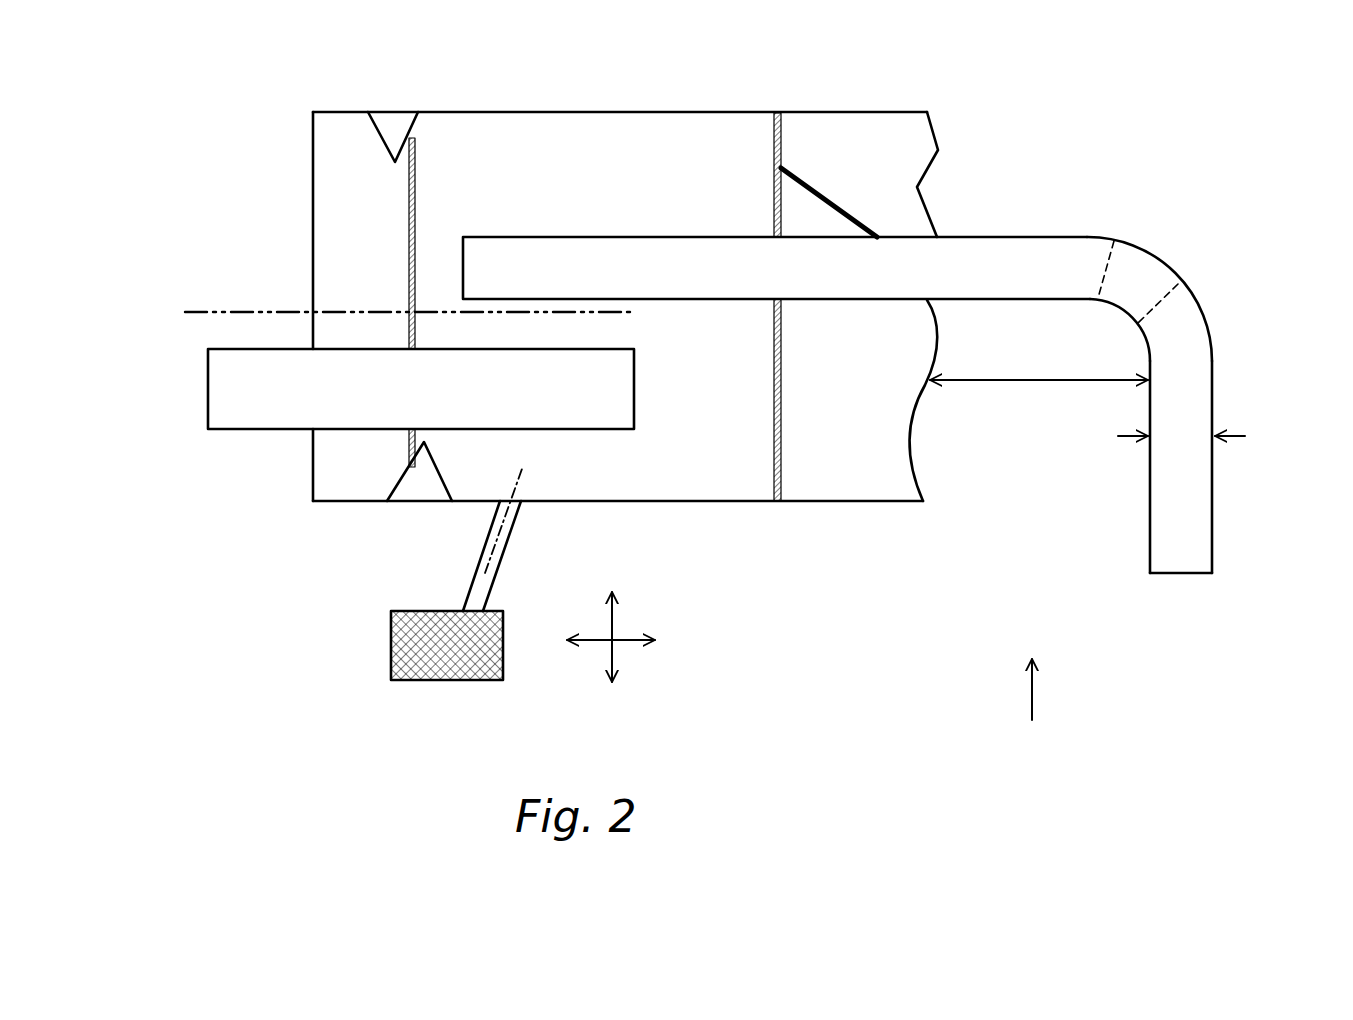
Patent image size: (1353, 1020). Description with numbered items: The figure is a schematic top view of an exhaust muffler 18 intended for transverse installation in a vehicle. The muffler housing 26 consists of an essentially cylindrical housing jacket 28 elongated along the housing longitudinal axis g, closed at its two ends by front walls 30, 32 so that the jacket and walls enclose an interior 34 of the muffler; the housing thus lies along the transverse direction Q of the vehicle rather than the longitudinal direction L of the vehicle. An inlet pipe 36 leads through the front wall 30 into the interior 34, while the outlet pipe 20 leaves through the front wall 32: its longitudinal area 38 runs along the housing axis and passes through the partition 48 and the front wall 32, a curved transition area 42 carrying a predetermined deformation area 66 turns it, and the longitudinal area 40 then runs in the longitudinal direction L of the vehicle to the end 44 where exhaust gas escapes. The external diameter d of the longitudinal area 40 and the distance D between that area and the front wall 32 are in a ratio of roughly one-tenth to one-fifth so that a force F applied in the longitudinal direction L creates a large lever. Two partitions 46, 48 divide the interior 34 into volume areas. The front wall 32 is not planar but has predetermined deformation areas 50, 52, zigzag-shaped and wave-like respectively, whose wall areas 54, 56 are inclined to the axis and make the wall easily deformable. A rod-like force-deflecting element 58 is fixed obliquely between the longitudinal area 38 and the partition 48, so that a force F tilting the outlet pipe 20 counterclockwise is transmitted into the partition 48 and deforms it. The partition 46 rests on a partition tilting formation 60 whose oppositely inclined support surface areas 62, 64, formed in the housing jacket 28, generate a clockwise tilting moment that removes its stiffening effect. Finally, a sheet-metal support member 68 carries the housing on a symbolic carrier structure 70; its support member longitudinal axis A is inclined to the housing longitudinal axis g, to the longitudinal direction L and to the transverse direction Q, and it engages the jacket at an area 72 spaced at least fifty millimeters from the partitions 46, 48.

The exhaust muffler 18 is at (1020, 90).
The outlet pipe 20 is at (1218, 386).
The muffler housing 26 is at (837, 535).
The housing jacket 28 is at (635, 113).
The front wall 30 is at (313, 172).
The front wall 32 is at (940, 147).
The interior of the muffler 34 is at (505, 140).
The inlet pipe 36 is at (208, 398).
The longitudinal area of the outlet pipe 38 is at (710, 237).
The longitudinal area of the outlet pipe 40 is at (1208, 497).
The curved transition area 42 is at (1167, 264).
The end of the outlet pipe 44 is at (1195, 574).
The partition 46 is at (408, 225).
The partition 48 is at (773, 462).
The predetermined deformation area 50 is at (960, 173).
The predetermined deformation area 52 is at (940, 462).
The wall area 54 is at (932, 213).
The wall area 56 is at (933, 363).
The force-deflecting element 58 is at (817, 188).
The partition tilting formation 60 is at (362, 90).
The partition support surface area 62 is at (422, 114).
The partition support surface area 64 is at (397, 485).
The predetermined deformation area 66 is at (1127, 270).
The support member 68 is at (480, 560).
The carrier structure 70 is at (388, 668).
The area 72 is at (530, 488).
The housing longitudinal axis g is at (203, 312).
The support member longitudinal axis A is at (503, 530).
The distance D is at (1033, 380).
The external diameter d is at (1230, 436).
The transverse direction of the vehicle Q is at (594, 642).
The longitudinal direction of the vehicle L is at (617, 662).
The force F is at (1035, 690).